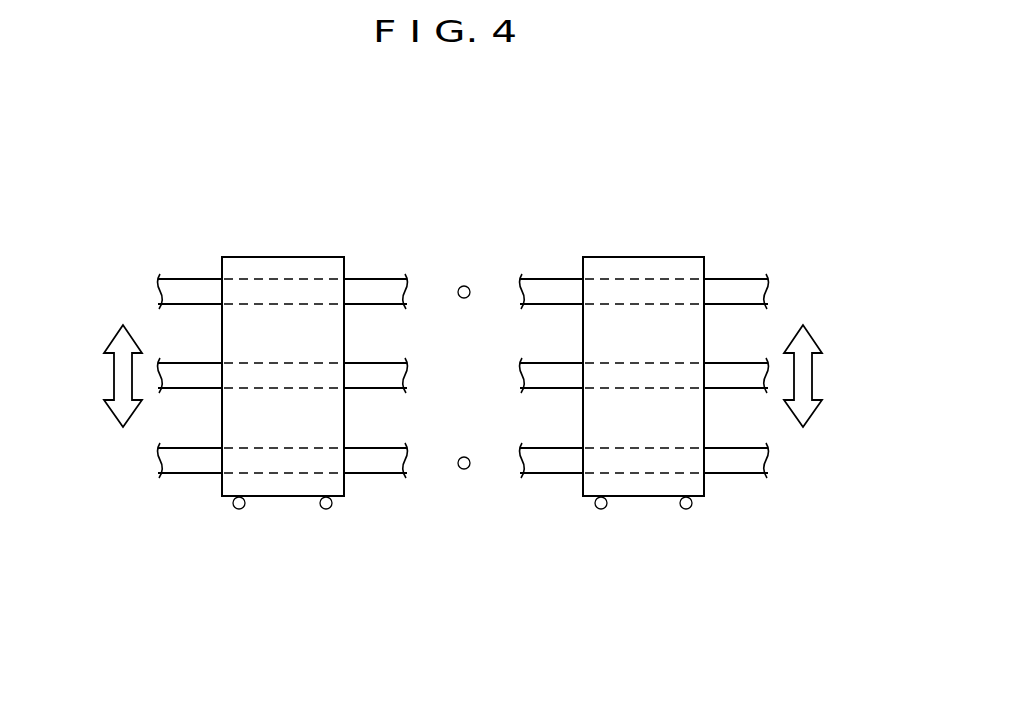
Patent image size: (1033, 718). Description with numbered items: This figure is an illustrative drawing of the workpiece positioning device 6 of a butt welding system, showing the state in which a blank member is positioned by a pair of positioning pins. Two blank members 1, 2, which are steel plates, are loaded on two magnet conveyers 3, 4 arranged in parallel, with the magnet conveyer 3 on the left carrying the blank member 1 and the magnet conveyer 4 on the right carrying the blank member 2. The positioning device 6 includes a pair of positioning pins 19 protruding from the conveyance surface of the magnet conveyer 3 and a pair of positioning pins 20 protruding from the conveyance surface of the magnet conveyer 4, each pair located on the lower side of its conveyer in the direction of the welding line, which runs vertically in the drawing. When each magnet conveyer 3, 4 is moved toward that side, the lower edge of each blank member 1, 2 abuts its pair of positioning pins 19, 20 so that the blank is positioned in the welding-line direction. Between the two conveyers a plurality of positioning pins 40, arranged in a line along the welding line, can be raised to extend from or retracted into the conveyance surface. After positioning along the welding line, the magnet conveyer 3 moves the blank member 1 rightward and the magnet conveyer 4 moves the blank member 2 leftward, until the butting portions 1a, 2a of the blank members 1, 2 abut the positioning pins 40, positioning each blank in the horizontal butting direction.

The blank member 1 is at (283, 265).
The butting portion 1a is at (345, 334).
The blank member 2 is at (644, 265).
The butting portion 2a is at (582, 334).
The magnet conveyer 3 is at (186, 278).
The magnet conveyer 4 is at (740, 278).
The workpiece positioning device 6 is at (676, 225).
The positioning pin 19 is at (243, 509).
The positioning pin 20 is at (605, 509).
The positioning pin 40 is at (463, 286).